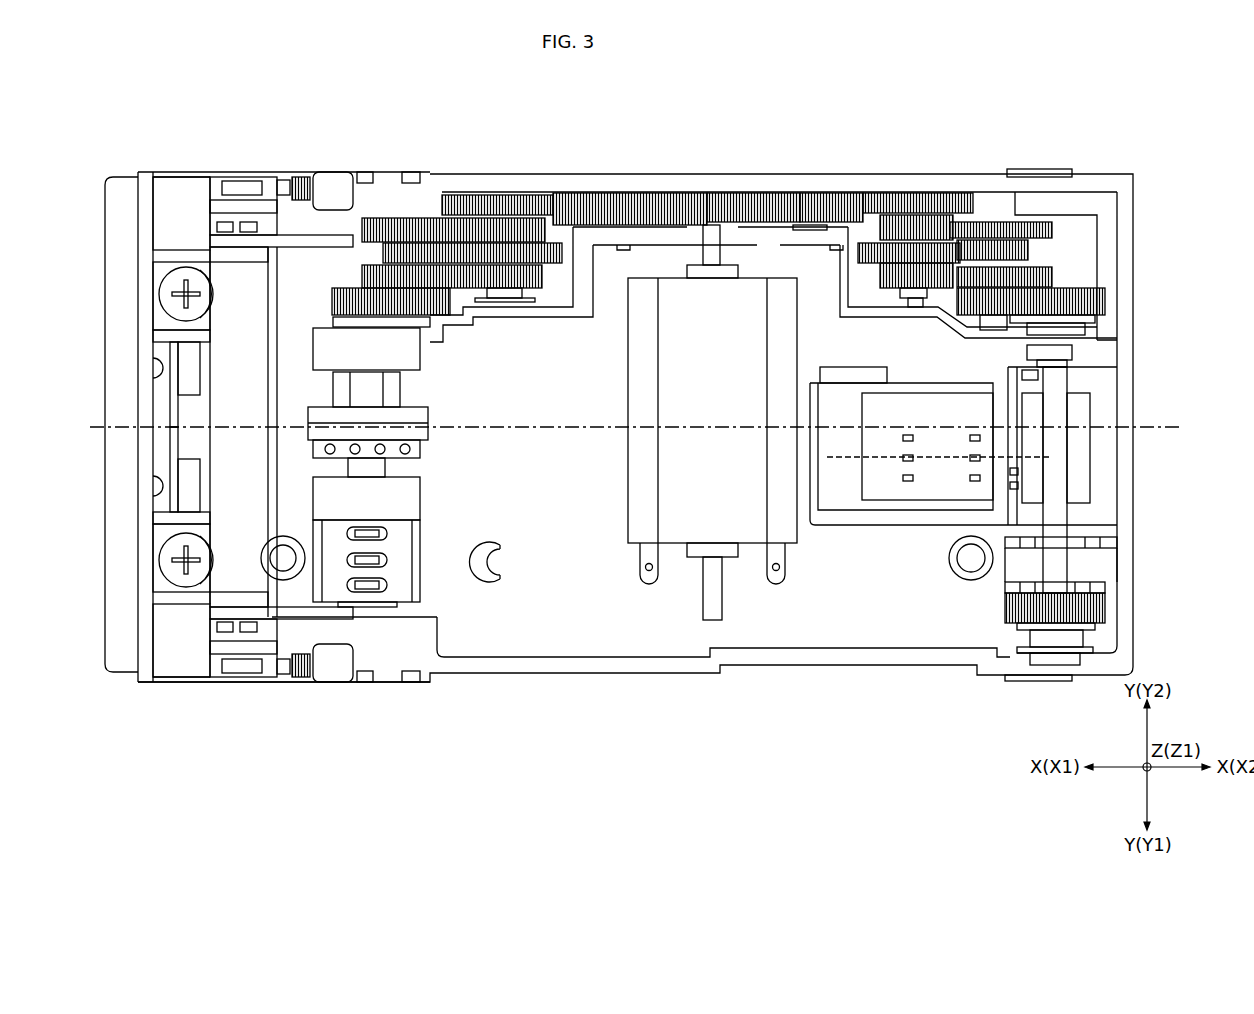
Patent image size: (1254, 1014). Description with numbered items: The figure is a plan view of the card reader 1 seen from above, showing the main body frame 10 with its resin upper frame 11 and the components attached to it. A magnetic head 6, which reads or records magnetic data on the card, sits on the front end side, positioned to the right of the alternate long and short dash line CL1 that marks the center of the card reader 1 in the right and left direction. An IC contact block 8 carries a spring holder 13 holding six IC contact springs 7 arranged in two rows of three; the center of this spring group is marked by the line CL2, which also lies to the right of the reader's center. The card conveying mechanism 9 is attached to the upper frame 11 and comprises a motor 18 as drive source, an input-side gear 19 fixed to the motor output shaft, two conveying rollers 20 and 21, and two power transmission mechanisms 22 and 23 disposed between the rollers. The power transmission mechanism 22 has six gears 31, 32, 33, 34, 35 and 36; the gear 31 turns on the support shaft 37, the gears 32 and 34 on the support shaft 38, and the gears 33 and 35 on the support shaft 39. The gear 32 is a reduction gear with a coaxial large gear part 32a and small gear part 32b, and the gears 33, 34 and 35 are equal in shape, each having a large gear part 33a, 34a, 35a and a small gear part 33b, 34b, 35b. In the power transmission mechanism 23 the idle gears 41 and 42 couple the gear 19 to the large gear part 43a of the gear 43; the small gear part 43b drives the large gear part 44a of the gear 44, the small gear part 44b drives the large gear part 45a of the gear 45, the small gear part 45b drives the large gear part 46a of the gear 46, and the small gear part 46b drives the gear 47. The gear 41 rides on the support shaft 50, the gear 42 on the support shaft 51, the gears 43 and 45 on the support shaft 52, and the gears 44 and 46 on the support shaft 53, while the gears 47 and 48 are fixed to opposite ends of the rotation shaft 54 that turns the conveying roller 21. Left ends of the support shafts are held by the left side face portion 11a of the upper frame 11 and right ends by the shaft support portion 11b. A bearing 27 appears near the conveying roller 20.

The card reader 1 is at (1168, 120).
The magnetic head 6 is at (415, 592).
The IC contact spring 7 is at (970, 478).
The IC contact block 8 is at (930, 494).
The card conveying mechanism 9 is at (270, 140).
The main body frame 10 is at (694, 446).
The upper frame 11 is at (618, 675).
The left side face portion 11a is at (606, 175).
The shaft support portion 11b is at (495, 320).
The spring holder 13 is at (908, 510).
The motor 18 is at (627, 510).
The gear 19 is at (710, 177).
The conveying roller 20 is at (425, 437).
The conveying roller 21 is at (1117, 567).
The power transmission mechanism 22 is at (510, 130).
The power transmission mechanism 23 is at (912, 130).
The bearing 27 is at (392, 472).
The gear 31 is at (663, 177).
The gear 32 is at (489, 163).
The large gear part 32a is at (452, 193).
The small gear part 32b is at (548, 193).
The gear 33 is at (453, 189).
The large gear part 33a is at (453, 230).
The small gear part 33b is at (383, 246).
The gear 34 is at (448, 317).
The large gear part 34a is at (411, 280).
The small gear part 34b is at (541, 290).
The gear 35 is at (420, 354).
The large gear part 35a is at (363, 276).
The small gear part 35b is at (362, 301).
The gear 36 is at (332, 303).
The support shaft 37 is at (623, 251).
The support shaft 38 is at (518, 300).
The support shaft 39 is at (420, 340).
The gear 41 is at (774, 177).
The gear 42 is at (825, 177).
The gear 43 is at (930, 174).
The large gear part 43a is at (958, 177).
The small gear part 43b is at (877, 177).
The gear 44 is at (1095, 219).
The large gear part 44a is at (1052, 232).
The small gear part 44b is at (1030, 250).
The gear 45 is at (833, 309).
The large gear part 45a is at (873, 258).
The small gear part 45b is at (876, 262).
The gear 46 is at (1090, 280).
The large gear part 46a is at (1053, 276).
The small gear part 46b is at (983, 320).
The gear 47 is at (1105, 300).
The gear 48 is at (1107, 612).
The support shaft 50 is at (765, 264).
The support shaft 51 is at (832, 251).
The support shaft 52 is at (905, 297).
The support shaft 53 is at (978, 348).
The rotation shaft 54 is at (1068, 484).
The center line CL1 is at (548, 420).
The center line CL2 is at (842, 510).